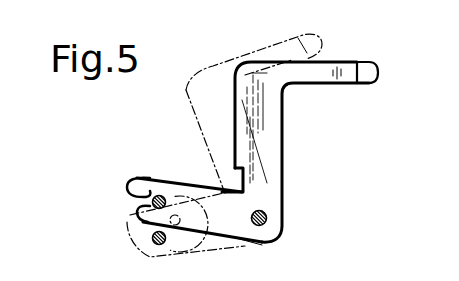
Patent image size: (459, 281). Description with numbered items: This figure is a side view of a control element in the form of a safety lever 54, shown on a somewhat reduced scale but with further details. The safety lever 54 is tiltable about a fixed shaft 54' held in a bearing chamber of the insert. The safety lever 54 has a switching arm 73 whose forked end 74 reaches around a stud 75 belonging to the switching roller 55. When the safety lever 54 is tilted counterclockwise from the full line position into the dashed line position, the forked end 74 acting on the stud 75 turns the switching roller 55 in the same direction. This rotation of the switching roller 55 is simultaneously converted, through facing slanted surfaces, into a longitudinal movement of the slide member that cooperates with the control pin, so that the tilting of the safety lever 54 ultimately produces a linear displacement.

The safety lever 54 is at (300, 152).
The fixed shaft 54' is at (298, 220).
The switching roller 55 is at (178, 188).
The switching arm 73 is at (241, 229).
The forked end 74 is at (143, 187).
The stud 75 is at (142, 212).